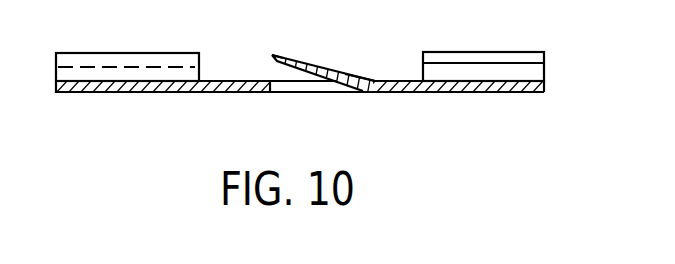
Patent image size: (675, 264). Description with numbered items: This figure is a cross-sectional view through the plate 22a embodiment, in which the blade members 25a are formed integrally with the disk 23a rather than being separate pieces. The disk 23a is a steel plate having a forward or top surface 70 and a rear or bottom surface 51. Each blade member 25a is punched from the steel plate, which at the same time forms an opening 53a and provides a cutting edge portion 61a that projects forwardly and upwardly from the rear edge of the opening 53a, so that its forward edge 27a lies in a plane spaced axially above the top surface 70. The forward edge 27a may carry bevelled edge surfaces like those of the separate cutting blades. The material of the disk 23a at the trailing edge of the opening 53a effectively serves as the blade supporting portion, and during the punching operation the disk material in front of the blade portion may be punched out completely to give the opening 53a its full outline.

The top surface 70 is at (215, 80).
The bottom surface 51 is at (147, 94).
The opening 53a is at (325, 93).
The cutting edge portion 61a is at (315, 66).
The forward edge 27a is at (274, 56).
The blade member 25a is at (355, 69).
The disk 23a is at (460, 93).
The plate 22a is at (404, 80).